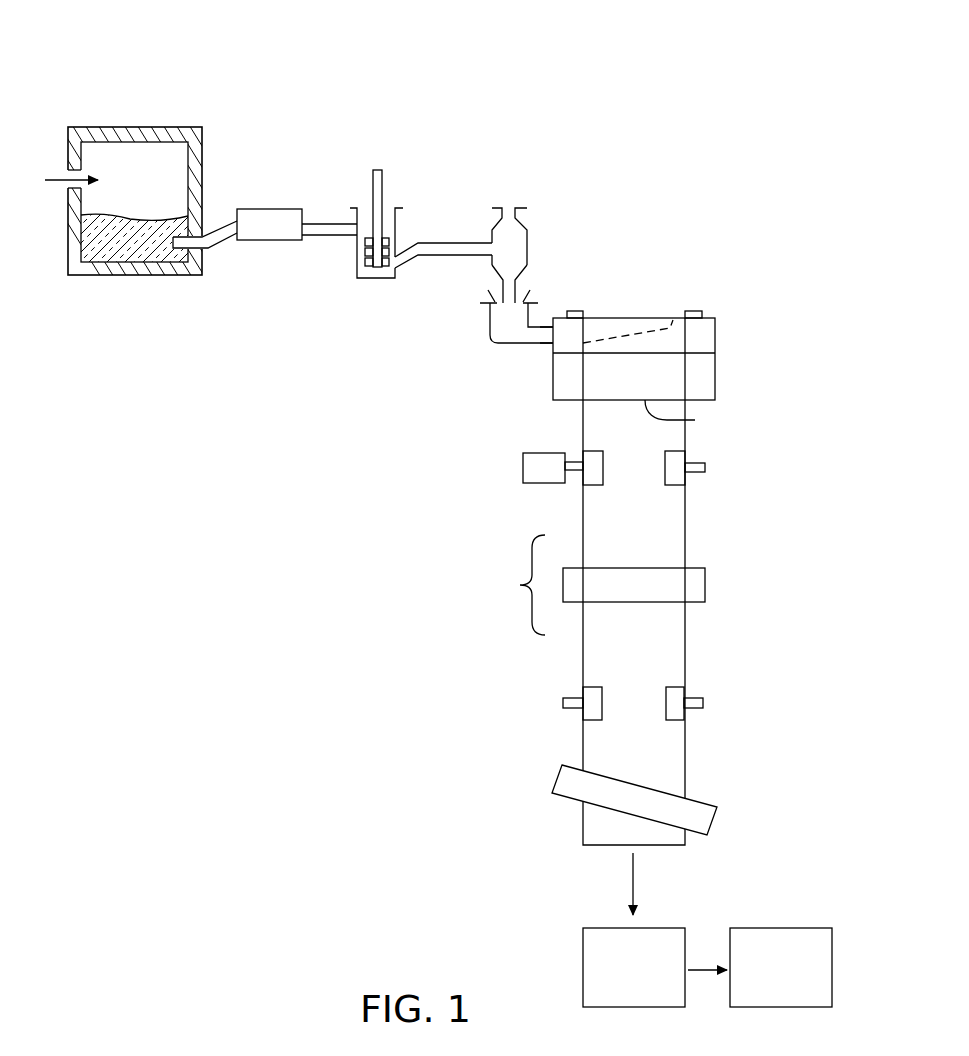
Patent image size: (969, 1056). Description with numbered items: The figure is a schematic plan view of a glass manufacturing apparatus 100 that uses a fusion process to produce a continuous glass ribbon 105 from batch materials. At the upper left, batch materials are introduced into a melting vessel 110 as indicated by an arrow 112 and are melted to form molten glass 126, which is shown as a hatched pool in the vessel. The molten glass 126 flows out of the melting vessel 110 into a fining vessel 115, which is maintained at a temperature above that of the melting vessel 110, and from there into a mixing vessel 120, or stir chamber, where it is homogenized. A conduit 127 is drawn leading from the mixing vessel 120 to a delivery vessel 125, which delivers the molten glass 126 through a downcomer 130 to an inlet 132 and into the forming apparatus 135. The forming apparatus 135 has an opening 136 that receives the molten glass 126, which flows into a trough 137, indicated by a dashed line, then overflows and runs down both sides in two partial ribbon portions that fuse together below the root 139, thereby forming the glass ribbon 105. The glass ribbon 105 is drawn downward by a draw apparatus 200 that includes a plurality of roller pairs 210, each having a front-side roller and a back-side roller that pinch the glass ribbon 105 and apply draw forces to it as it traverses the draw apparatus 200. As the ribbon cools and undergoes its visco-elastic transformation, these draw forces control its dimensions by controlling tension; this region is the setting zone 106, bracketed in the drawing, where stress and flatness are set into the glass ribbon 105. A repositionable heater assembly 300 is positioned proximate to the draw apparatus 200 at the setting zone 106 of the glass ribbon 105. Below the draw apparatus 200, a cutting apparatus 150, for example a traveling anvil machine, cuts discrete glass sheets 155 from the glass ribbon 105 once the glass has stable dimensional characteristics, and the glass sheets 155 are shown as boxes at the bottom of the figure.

The glass manufacturing apparatus 100 is at (643, 77).
The glass ribbon 105 is at (685, 765).
The setting zone 106 is at (506, 585).
The melting vessel 110 is at (137, 127).
The arrow 112 is at (45, 178).
The fining vessel 115 is at (273, 208).
The mixing vessel 120 is at (403, 218).
The delivery vessel 125 is at (527, 230).
The molten glass 126 is at (130, 221).
The transfer conduit 127 is at (448, 257).
The downcomer 130 is at (517, 287).
The inlet 132 is at (495, 345).
The forming apparatus 135 is at (683, 342).
The opening 136 is at (552, 350).
The trough 137 is at (645, 322).
The root 139 is at (689, 416).
The cutting apparatus 150 is at (552, 785).
The glass sheets 155 is at (614, 981).
The draw apparatus 200 is at (818, 383).
The roller pairs 210 is at (522, 468).
The repositionable heater assembly 300 is at (688, 562).